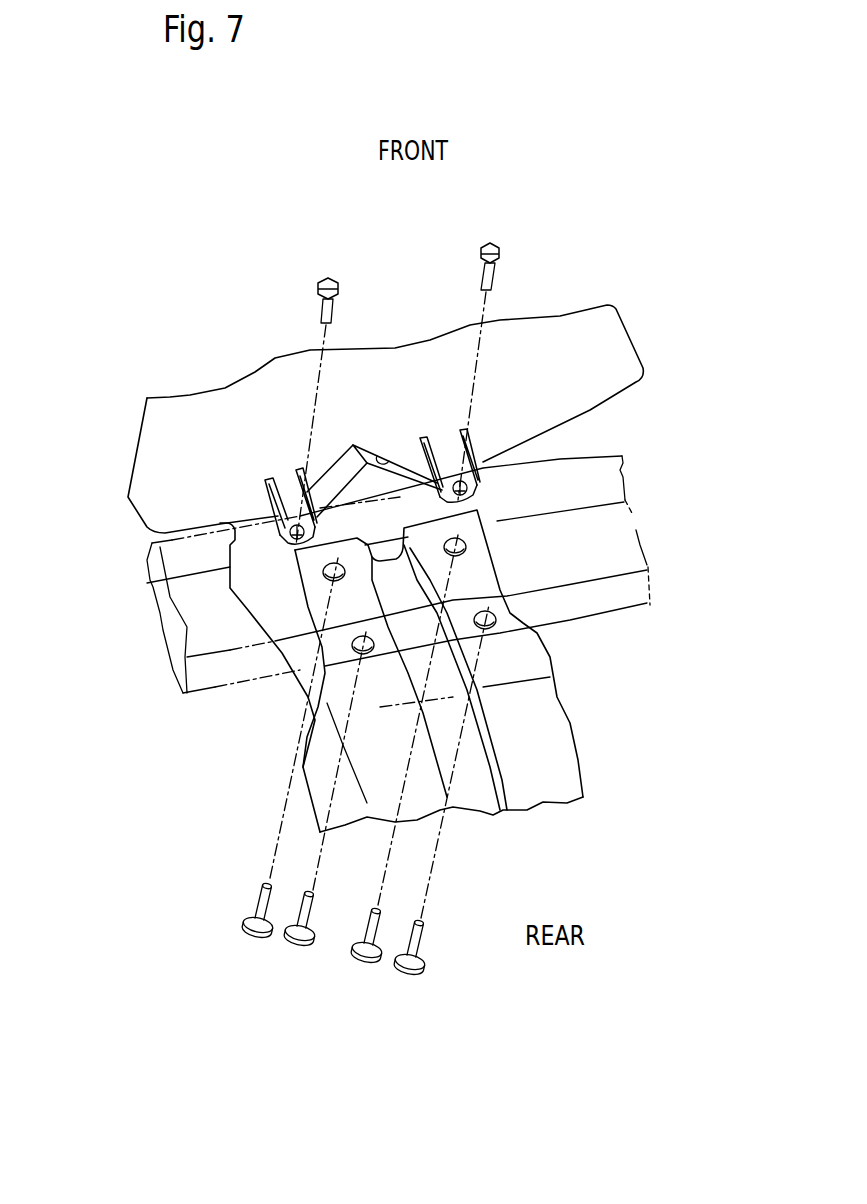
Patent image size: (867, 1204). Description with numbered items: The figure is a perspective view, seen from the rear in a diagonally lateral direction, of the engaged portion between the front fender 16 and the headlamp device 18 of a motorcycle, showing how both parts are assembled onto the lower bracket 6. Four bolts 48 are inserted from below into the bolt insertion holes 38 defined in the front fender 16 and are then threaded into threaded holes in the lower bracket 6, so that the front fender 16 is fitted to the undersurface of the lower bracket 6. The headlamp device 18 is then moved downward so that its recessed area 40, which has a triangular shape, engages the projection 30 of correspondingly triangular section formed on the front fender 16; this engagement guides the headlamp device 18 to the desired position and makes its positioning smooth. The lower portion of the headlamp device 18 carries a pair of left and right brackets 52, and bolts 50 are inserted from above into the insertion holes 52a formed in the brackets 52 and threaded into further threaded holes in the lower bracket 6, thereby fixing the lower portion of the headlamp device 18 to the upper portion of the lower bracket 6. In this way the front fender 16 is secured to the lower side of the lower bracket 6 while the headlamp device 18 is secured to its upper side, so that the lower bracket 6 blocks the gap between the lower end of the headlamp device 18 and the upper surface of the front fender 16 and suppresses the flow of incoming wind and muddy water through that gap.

The lower bracket 6 is at (572, 620).
The front fender 16 is at (608, 776).
The headlamp device 18 is at (588, 337).
The projection 30 is at (338, 477).
The bolt insertion holes 38 is at (462, 537).
The recessed area 40 is at (390, 457).
The bolts 48 is at (407, 972).
The bolts 50 is at (329, 278).
The brackets 52 is at (372, 385).
The insertion holes 52a is at (483, 462).